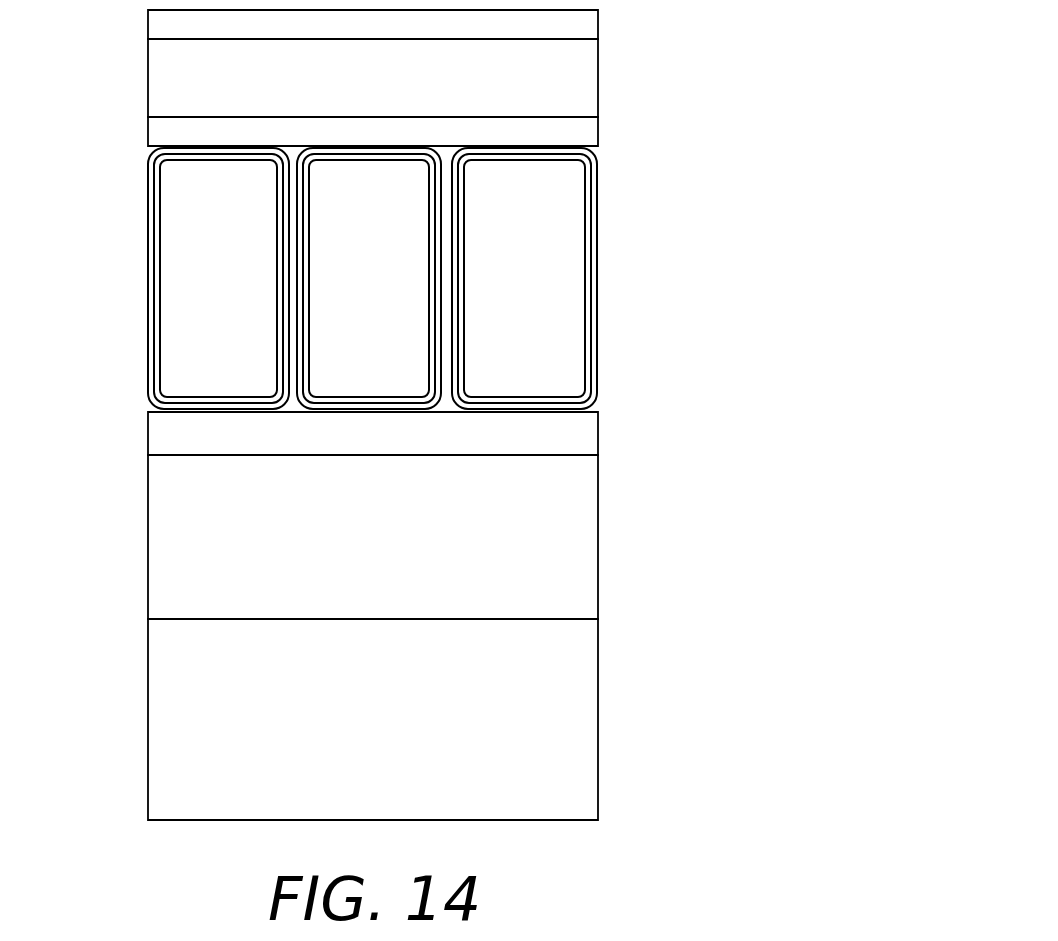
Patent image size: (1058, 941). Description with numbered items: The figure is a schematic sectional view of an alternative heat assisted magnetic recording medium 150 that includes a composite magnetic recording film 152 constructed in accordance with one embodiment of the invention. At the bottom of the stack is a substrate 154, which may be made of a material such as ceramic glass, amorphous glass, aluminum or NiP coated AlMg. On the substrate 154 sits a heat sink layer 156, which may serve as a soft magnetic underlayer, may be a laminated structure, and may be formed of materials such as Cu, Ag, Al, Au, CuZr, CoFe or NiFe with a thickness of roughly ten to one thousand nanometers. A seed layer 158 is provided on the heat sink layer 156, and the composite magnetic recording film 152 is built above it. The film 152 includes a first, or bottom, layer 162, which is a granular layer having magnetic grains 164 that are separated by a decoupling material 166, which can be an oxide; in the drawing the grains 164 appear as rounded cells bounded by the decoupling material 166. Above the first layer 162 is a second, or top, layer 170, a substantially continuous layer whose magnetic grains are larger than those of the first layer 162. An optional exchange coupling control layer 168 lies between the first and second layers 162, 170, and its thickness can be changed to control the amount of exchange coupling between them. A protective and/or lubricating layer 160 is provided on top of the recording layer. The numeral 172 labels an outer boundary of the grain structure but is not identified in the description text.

The heat assisted magnetic recording medium 150 is at (792, 166).
The composite magnetic recording film 152 is at (117, 40).
The substrate 154 is at (582, 725).
The heat sink layer 156 is at (581, 552).
The seed layer 158 is at (586, 436).
The protective and/or lubricating layer 160 is at (599, 25).
The first layer 162 is at (678, 147).
The magnetic grains 164 is at (503, 383).
The decoupling material 166 is at (297, 410).
The exchange coupling control layer 168 is at (588, 132).
The second layer 170 is at (585, 78).
The outer liner 172 is at (216, 146).